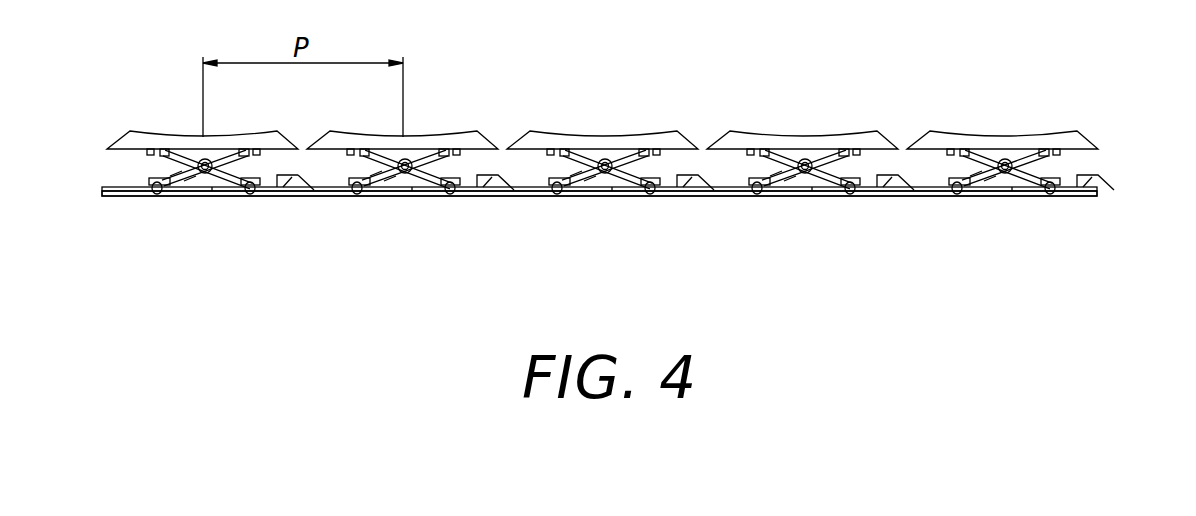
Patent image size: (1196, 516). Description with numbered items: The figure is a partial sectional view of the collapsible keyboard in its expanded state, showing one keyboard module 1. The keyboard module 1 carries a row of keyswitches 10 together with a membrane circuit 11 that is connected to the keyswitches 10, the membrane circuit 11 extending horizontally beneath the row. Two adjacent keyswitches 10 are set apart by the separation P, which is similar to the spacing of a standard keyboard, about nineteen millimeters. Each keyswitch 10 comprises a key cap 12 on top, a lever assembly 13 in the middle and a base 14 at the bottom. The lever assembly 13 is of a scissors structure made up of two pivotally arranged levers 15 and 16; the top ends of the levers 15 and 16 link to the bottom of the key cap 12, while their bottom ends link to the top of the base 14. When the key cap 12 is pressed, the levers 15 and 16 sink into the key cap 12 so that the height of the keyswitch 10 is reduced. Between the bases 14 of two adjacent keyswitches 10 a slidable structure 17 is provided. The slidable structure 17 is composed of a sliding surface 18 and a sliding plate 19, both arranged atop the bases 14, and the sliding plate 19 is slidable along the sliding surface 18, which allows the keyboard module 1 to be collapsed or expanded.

The keyboard module 1 is at (633, 187).
The keyswitch 10 is at (295, 187).
The membrane circuit 11 is at (1092, 187).
The key cap 12 is at (172, 134).
The lever assembly 13 is at (272, 259).
The base 14 is at (133, 194).
The lever 15 is at (250, 177).
The lever 16 is at (252, 186).
The slidable structure 17 is at (380, 250).
The sliding surface 18 is at (303, 190).
The sliding plate 19 is at (327, 188).